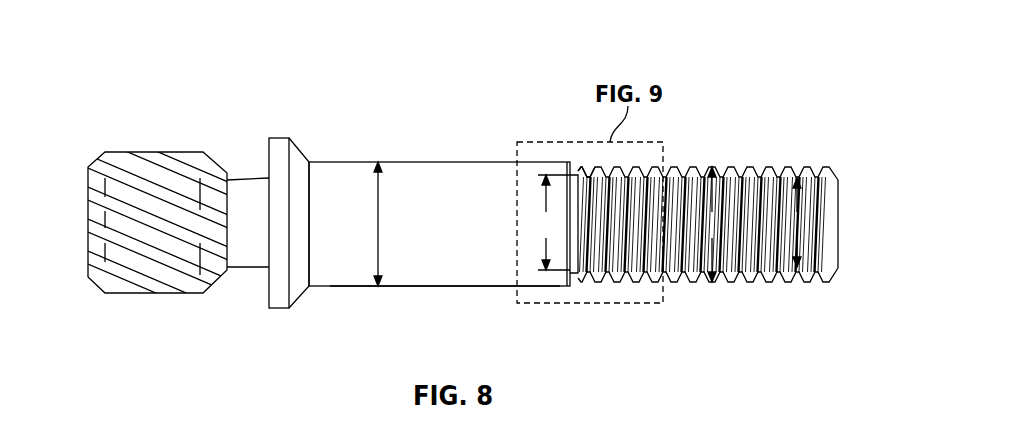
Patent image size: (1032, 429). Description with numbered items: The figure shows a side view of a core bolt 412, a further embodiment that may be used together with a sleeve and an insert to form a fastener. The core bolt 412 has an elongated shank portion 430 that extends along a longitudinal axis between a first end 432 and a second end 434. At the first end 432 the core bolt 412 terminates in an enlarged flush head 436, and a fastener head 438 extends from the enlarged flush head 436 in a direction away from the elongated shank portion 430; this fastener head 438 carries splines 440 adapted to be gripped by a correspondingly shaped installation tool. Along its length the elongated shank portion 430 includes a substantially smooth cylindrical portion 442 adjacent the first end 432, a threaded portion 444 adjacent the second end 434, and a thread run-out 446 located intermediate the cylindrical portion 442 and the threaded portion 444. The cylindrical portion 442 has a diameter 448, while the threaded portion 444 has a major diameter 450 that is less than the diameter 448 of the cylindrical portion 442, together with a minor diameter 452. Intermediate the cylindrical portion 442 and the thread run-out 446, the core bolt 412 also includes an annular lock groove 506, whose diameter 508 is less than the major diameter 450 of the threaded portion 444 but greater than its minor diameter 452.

The core bolt 412 is at (161, 44).
The elongated shank portion 430 is at (428, 162).
The first end 432 is at (310, 252).
The second end 434 is at (840, 223).
The enlarged flush head 436 is at (269, 152).
The fastener head 438 is at (87, 186).
The splines 440 is at (125, 150).
The cylindrical portion 442 is at (438, 287).
The threaded portion 444 is at (772, 167).
The thread run-out 446 is at (573, 283).
The diameter 448 is at (380, 223).
The major diameter 450 is at (714, 224).
The minor diameter 452 is at (798, 222).
The annular lock groove 506 is at (577, 167).
The diameter 508 is at (547, 222).